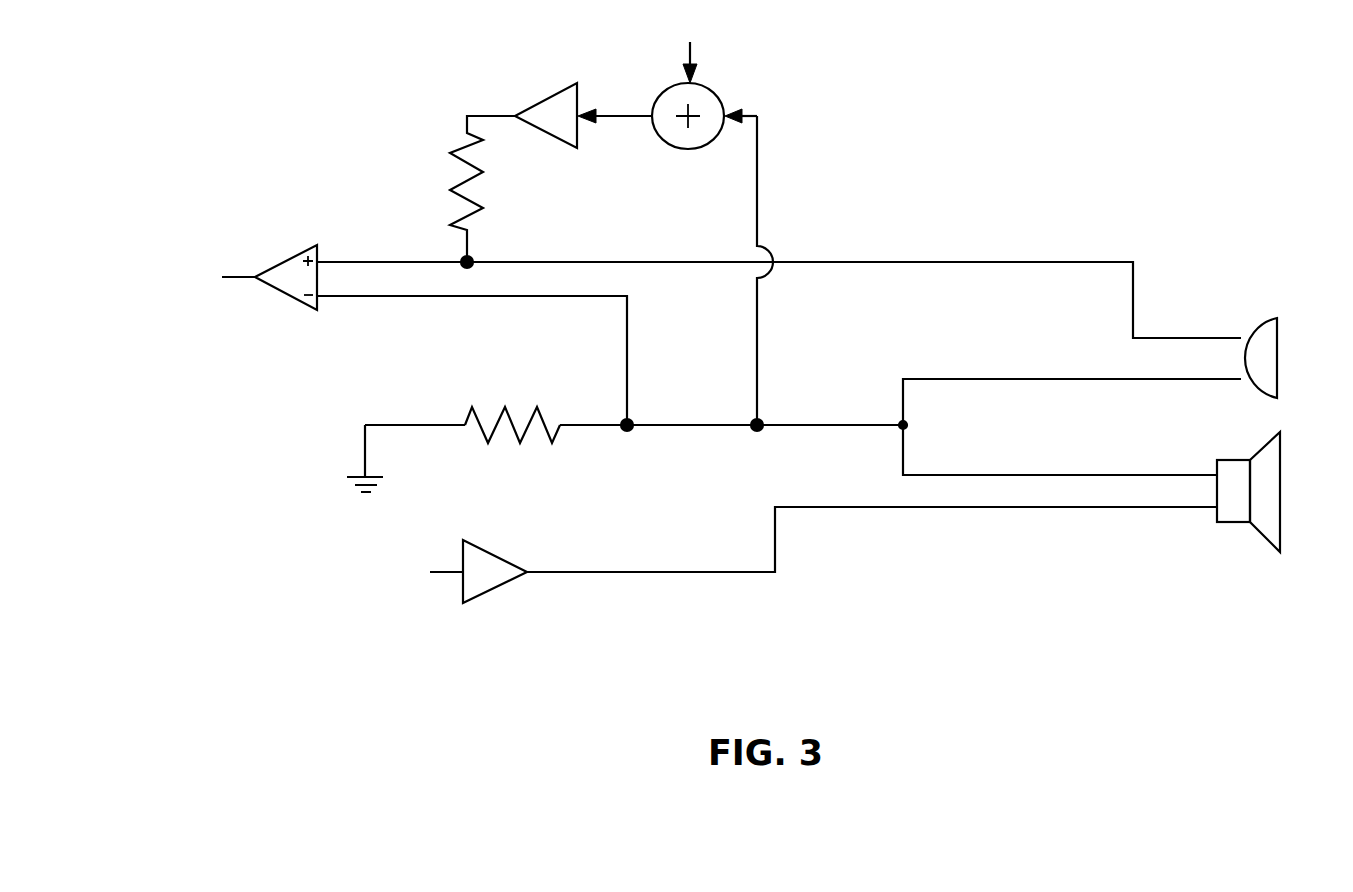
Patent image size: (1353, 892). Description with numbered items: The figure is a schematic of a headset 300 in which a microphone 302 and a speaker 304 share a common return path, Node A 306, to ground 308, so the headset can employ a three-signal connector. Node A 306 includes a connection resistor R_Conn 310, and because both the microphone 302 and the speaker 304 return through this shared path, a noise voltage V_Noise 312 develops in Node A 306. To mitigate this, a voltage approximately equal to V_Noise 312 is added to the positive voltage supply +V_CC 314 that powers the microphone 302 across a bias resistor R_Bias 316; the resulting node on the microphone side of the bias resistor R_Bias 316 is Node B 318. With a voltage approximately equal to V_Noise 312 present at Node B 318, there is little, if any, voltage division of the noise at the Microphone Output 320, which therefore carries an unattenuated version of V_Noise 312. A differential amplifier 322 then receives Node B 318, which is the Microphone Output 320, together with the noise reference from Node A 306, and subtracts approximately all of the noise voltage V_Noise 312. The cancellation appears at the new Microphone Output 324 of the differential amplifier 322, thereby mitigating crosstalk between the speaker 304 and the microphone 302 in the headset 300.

The headset 300 is at (1204, 124).
The microphone 302 is at (1279, 358).
The speaker 304 is at (1280, 490).
The Node A 306 is at (825, 425).
The ground 308 is at (358, 477).
The connection resistor R_Conn 310 is at (552, 443).
The noise voltage V_Noise 312 is at (950, 357).
The positive voltage supply +V_CC 314 is at (709, 83).
The bias resistor R_Bias 316 is at (446, 153).
The Node B 318 is at (847, 262).
The Microphone Output 320 is at (550, 237).
The differential amplifier 322 is at (307, 248).
The new Microphone Output 324 is at (187, 222).